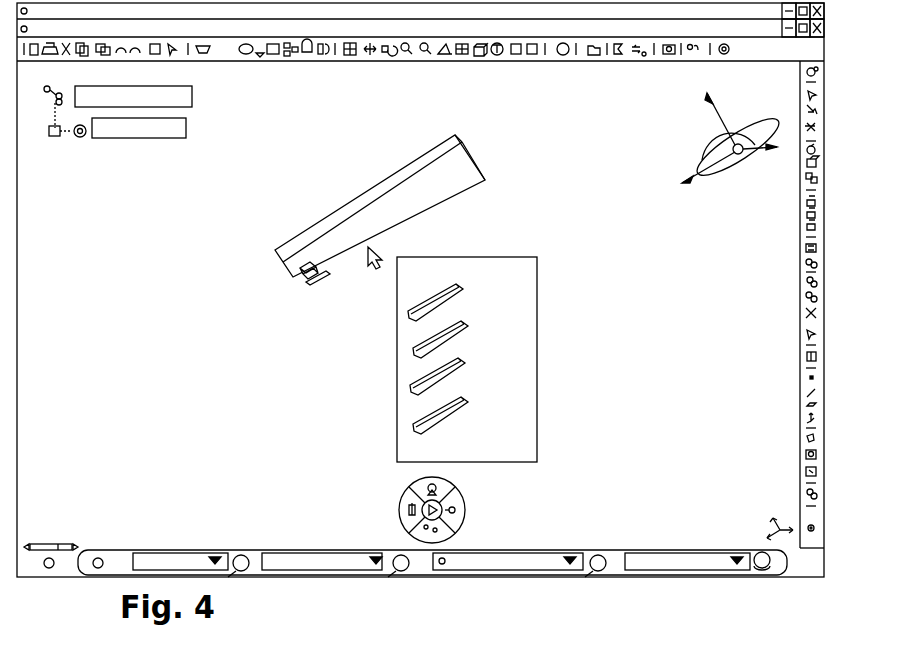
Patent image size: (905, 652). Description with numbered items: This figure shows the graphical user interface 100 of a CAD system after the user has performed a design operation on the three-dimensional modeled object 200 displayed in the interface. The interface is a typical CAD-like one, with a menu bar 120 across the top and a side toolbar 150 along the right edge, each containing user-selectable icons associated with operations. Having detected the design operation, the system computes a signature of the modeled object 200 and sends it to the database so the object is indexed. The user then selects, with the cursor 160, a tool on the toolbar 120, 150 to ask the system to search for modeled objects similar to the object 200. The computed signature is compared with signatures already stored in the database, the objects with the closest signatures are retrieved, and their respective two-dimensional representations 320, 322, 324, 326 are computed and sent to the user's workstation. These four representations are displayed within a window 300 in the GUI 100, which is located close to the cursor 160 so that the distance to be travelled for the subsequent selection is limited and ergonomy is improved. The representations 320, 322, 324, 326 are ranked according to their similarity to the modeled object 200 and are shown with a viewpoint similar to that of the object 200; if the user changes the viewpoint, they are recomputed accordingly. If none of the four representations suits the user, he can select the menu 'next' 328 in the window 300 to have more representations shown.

The graphical user interface 100 is at (420, 290).
The menu bar 120 is at (605, 62).
The side toolbar 150 is at (798, 402).
The cursor 160 is at (369, 266).
The modeled object 200 is at (462, 163).
The window 300 is at (562, 385).
The 2D representation 320 is at (530, 291).
The 2D representation 322 is at (530, 325).
The 2D representation 324 is at (530, 364).
The 2D representation 326 is at (530, 402).
The menu 'next' 328 is at (486, 447).